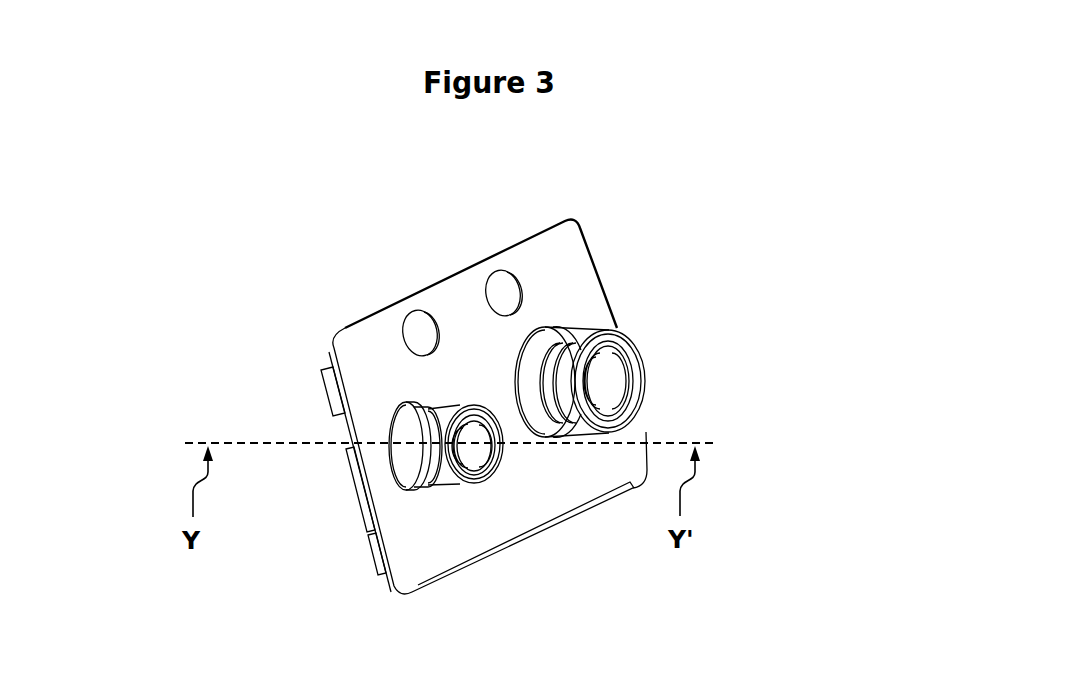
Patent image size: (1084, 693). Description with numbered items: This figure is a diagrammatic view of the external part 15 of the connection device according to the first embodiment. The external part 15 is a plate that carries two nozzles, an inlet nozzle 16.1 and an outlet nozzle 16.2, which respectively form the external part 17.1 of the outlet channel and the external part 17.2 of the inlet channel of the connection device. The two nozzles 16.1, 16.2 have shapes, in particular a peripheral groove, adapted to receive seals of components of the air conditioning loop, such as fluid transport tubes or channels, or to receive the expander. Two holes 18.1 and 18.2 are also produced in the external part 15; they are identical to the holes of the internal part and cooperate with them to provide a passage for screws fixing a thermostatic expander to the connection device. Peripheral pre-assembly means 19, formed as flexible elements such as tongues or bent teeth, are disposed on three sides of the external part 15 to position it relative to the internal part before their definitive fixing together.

The external part 15 is at (196, 265).
The peripheral pre-assembly means 19 is at (318, 383).
The hole 18.1 is at (500, 292).
The hole 18.2 is at (418, 328).
The inlet nozzle 16.1 is at (558, 345).
The outlet nozzle 16.2 is at (410, 446).
The external part of the outlet channel 17.1 is at (596, 385).
The external part of the inlet channel 17.2 is at (465, 455).